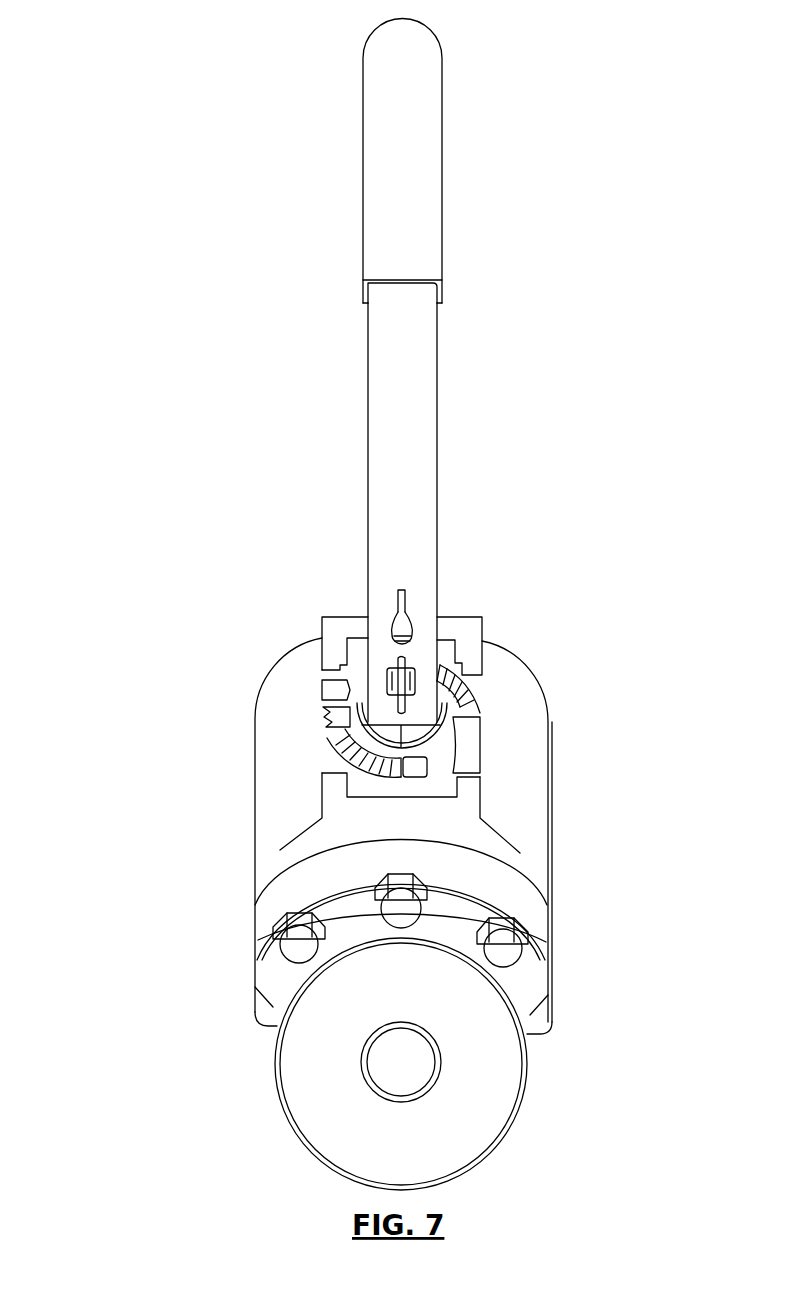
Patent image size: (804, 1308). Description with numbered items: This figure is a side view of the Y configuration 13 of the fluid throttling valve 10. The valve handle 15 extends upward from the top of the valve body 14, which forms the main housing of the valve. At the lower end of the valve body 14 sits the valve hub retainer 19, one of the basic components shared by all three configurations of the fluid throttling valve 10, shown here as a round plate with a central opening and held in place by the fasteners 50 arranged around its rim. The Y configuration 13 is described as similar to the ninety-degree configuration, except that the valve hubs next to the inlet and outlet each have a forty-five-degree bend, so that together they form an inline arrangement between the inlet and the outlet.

The fluid throttling valve 10 is at (137, 323).
The Y configuration 13 is at (539, 680).
The valve body 14 is at (530, 803).
The valve handle 15 is at (385, 465).
The valve hub retainer 19 is at (525, 983).
The bolts 50 is at (278, 933).